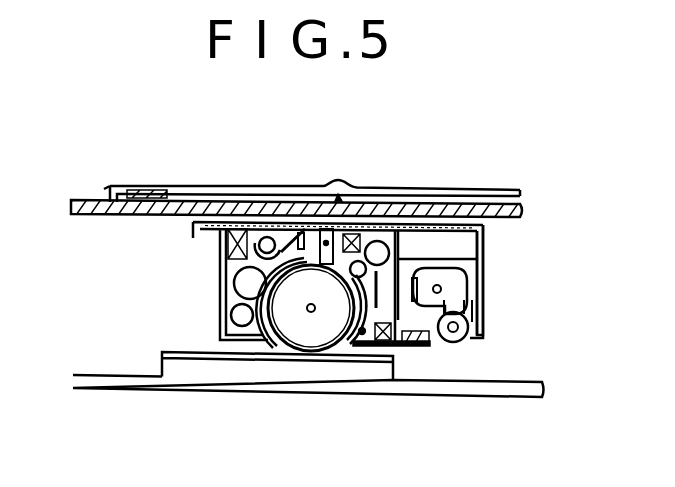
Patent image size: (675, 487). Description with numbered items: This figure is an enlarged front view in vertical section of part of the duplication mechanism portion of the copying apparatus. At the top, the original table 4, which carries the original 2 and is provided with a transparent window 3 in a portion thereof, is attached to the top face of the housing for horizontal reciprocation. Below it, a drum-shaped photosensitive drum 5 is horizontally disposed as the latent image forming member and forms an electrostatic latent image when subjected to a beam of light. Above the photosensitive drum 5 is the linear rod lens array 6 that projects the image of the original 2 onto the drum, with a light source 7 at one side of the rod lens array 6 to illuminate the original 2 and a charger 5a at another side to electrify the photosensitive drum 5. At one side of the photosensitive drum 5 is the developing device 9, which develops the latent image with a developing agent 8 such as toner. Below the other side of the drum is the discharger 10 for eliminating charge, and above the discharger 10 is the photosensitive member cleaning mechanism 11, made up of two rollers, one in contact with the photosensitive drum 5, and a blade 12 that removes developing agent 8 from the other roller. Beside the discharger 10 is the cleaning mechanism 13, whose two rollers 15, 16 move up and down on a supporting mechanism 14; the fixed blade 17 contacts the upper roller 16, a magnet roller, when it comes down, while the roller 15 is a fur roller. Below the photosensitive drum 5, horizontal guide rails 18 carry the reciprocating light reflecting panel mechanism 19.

The original 2 is at (160, 188).
The transparent window 3 is at (122, 190).
The original table 4 is at (488, 201).
The photosensitive drum 5 is at (343, 352).
The charger 5a is at (331, 229).
The rod lens array 6 is at (300, 249).
The light source 7 is at (263, 243).
The developing agent 8 is at (248, 341).
The developing device 9 is at (238, 286).
The discharger 10 is at (365, 342).
The photosensitive member cleaning mechanism 11 is at (373, 245).
The blade 12 is at (413, 301).
The cleaning mechanism 13 is at (460, 272).
The supporting mechanism 14 is at (464, 300).
The roller 15 is at (470, 340).
The roller 16 is at (414, 345).
The blade 17 is at (447, 342).
The guide rails 18 is at (128, 380).
The light reflecting panel mechanism 19 is at (195, 375).